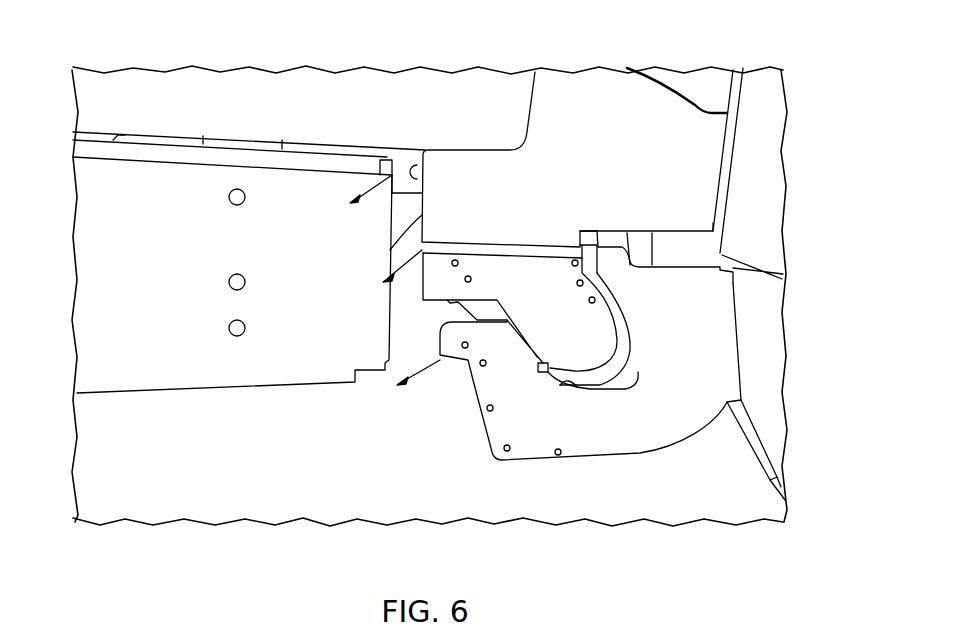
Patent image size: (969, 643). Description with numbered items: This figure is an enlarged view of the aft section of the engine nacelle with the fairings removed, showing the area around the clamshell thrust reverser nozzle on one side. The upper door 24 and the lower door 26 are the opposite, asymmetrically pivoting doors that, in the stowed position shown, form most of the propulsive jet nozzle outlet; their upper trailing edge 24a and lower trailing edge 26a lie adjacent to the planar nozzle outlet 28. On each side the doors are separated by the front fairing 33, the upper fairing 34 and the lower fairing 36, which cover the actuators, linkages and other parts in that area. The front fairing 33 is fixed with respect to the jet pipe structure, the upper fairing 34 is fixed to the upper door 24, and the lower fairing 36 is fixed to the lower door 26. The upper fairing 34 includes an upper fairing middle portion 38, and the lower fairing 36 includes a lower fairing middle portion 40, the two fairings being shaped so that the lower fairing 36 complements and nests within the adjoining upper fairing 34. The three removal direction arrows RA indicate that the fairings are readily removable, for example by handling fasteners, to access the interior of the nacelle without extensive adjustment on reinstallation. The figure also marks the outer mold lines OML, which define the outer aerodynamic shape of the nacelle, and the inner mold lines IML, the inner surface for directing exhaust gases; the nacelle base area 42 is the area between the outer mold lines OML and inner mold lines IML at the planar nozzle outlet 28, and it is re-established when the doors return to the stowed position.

The outer mold lines OML is at (490, 102).
The inner mold lines IML is at (735, 110).
The upper door 24 is at (602, 112).
The upper trailing edge 24a is at (718, 172).
The nacelle base area 42 is at (720, 195).
The planar nozzle outlet 28 is at (763, 302).
The front fairing 33 is at (80, 257).
The upper fairing 34 is at (571, 334).
The upper fairing middle portion 38 is at (613, 367).
The lower fairing middle portion 40 is at (575, 374).
The lower fairing 36 is at (653, 430).
The lower door 26 is at (440, 497).
The lower trailing edge 26a is at (752, 442).
The removal direction arrows RA is at (428, 370).